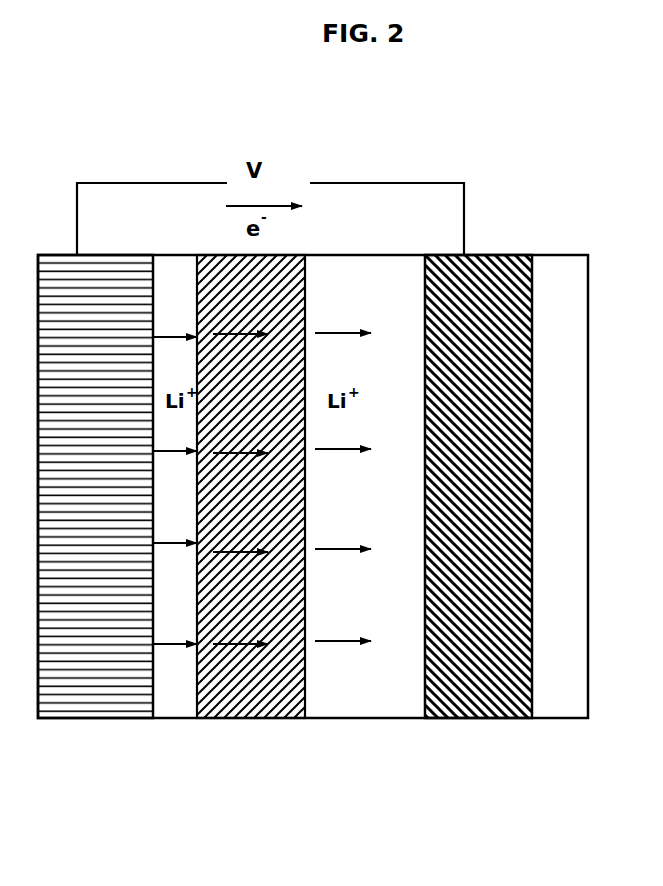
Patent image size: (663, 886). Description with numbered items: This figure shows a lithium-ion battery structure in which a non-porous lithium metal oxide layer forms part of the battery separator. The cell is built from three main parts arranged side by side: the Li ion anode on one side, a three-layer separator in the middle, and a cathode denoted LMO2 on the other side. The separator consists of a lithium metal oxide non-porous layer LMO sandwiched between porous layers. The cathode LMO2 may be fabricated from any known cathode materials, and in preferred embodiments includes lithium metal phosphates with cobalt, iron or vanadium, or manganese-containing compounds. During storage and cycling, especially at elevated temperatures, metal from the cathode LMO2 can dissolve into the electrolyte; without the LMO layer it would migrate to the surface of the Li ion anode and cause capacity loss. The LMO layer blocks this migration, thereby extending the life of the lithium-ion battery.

The lithium-ion anode Li ion anode is at (100, 718).
The lithium metal oxide non-porous layer LMO is at (252, 718).
The cathode LMO2 is at (473, 716).